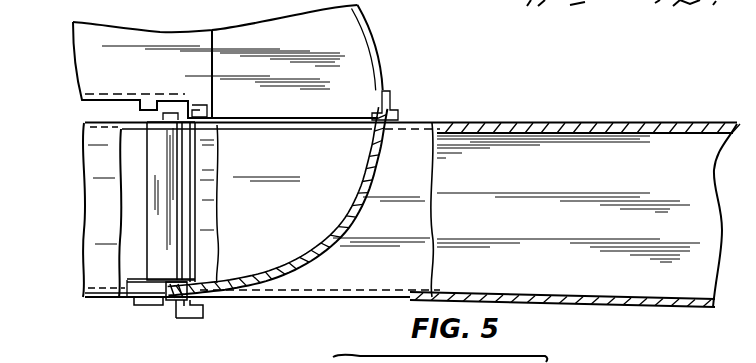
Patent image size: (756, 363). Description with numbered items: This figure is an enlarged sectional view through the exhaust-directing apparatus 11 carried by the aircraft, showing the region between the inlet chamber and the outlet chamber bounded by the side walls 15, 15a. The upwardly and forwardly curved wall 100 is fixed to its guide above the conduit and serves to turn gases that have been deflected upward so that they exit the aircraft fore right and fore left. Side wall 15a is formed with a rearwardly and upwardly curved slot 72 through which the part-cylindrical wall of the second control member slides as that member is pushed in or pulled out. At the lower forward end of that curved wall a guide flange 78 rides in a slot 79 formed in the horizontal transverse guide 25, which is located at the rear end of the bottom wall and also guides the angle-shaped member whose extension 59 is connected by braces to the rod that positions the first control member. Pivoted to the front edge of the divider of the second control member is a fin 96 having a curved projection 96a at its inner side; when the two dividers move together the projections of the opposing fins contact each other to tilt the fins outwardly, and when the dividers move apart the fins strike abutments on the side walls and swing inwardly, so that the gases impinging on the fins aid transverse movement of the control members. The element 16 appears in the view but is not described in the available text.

The upwardly and forwardly curved wall 100 is at (375, 43).
The apparatus 11 is at (628, 118).
The side wall 15 is at (146, 191).
The side wall 15a is at (92, 280).
The fin 96 is at (150, 200).
The curved projection 96a is at (148, 128).
The curved slot 72 is at (350, 220).
The arc member 16 is at (300, 268).
The guide flange 78 is at (158, 303).
The slot 79 is at (170, 302).
The extension 59 is at (181, 308).
The guide 25 is at (207, 314).